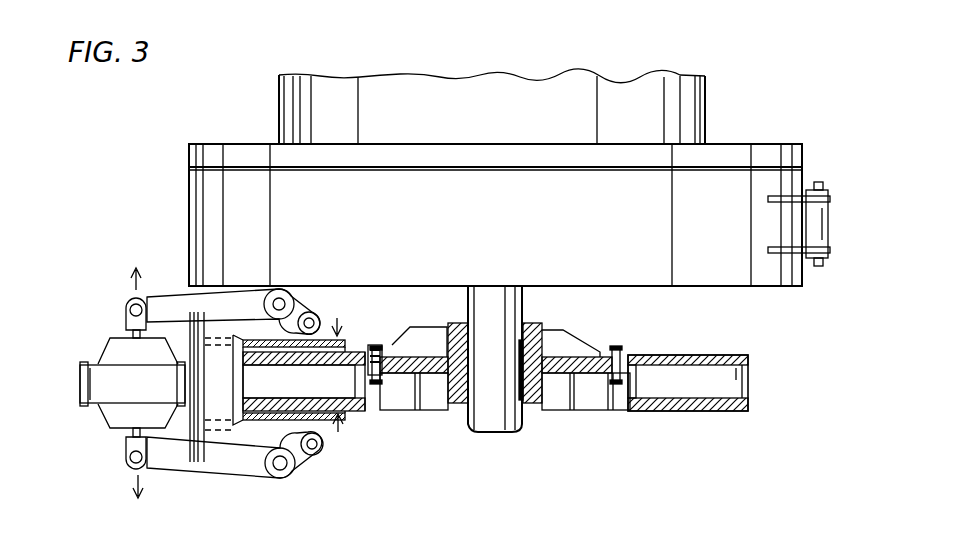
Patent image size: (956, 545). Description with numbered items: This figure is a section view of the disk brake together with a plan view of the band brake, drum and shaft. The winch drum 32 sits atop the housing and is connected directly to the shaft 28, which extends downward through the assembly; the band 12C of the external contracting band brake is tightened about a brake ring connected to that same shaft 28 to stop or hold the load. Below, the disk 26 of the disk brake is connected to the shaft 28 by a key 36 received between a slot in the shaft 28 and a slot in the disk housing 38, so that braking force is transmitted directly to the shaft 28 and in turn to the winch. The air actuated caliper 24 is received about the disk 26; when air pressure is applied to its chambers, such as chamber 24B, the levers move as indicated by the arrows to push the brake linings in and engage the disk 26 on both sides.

The band 12C is at (203, 208).
The drum 32 is at (630, 92).
The shaft 28 is at (525, 305).
The disk housing 38 is at (545, 395).
The key 36 is at (527, 413).
The disk 26 is at (715, 412).
The chamber 24B is at (118, 352).
The caliper 24 is at (195, 465).